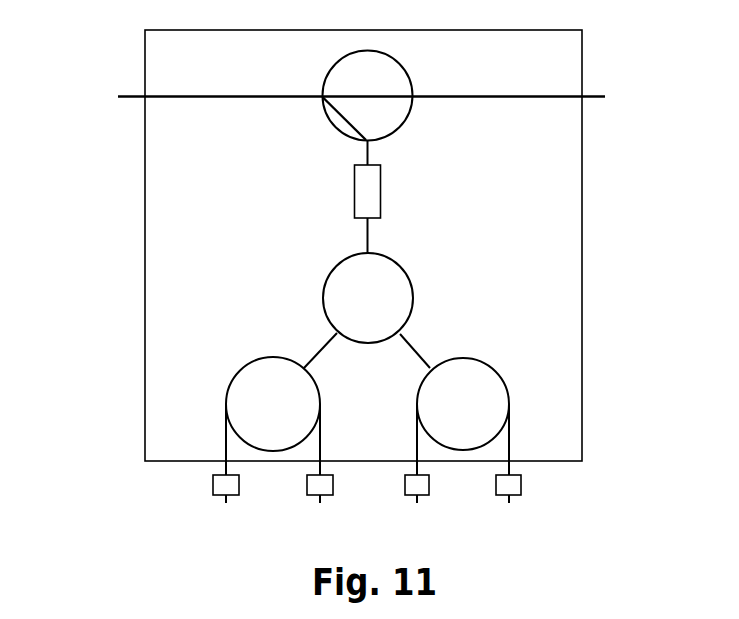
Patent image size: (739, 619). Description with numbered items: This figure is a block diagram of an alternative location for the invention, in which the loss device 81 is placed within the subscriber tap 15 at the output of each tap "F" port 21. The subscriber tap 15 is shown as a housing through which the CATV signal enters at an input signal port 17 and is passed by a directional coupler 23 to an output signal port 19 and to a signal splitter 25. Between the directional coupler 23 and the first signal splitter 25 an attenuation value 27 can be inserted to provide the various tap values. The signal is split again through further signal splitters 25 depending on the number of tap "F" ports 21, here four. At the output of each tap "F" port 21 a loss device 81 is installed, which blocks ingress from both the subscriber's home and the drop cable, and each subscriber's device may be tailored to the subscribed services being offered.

The subscriber tap 15 is at (187, 64).
The input signal port 17 is at (118, 96).
The output signal port 19 is at (606, 94).
The tap "F" port 21 is at (222, 468).
The directional coupler 23 is at (332, 62).
The signal splitter 25 is at (387, 314).
The attenuation value 27 is at (381, 183).
The loss device 81 is at (307, 472).